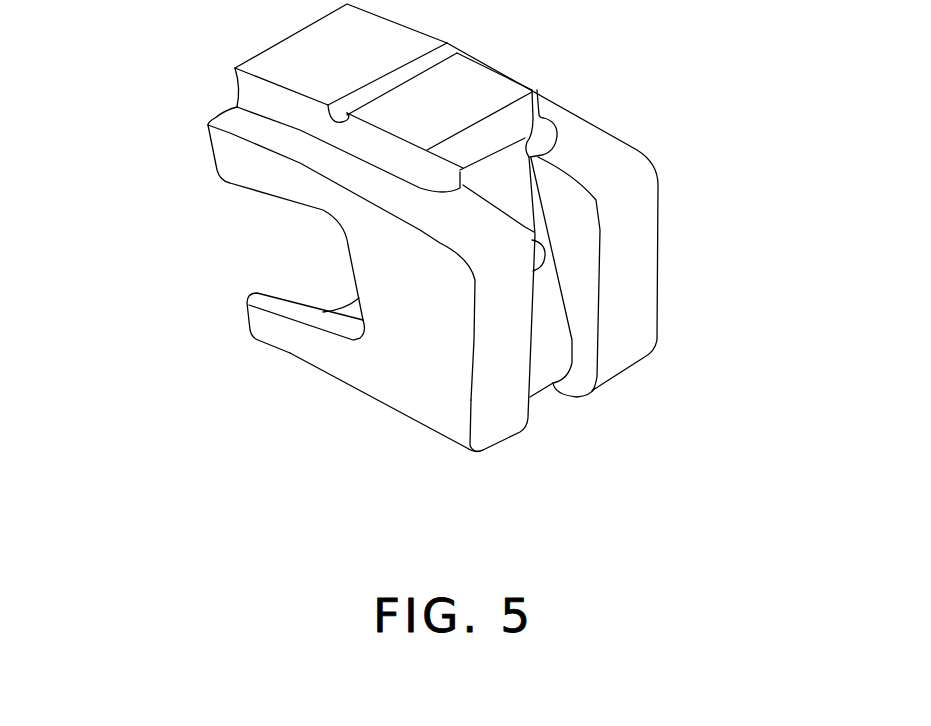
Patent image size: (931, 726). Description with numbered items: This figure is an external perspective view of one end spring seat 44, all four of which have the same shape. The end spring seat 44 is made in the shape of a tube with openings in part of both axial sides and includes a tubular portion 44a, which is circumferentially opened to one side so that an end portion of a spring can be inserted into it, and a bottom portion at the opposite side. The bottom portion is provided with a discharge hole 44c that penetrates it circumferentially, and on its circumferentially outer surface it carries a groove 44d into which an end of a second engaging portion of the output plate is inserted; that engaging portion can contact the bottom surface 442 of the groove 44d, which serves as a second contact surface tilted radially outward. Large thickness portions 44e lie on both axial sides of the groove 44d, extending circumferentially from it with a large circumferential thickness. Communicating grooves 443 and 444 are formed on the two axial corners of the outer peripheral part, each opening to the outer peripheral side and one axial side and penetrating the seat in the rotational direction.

The end spring seat 44 is at (218, 448).
The communicating groove 444 is at (260, 116).
The tubular portion 44a is at (223, 151).
The communicating groove 443 is at (539, 92).
The bottom surface of the groove 442 is at (522, 208).
The large thickness portion 44e is at (503, 355).
The discharge hole 44c is at (540, 255).
The groove 44d is at (548, 318).